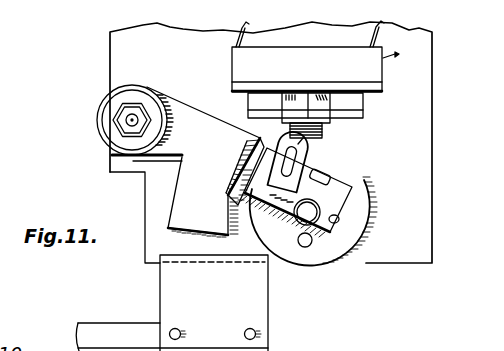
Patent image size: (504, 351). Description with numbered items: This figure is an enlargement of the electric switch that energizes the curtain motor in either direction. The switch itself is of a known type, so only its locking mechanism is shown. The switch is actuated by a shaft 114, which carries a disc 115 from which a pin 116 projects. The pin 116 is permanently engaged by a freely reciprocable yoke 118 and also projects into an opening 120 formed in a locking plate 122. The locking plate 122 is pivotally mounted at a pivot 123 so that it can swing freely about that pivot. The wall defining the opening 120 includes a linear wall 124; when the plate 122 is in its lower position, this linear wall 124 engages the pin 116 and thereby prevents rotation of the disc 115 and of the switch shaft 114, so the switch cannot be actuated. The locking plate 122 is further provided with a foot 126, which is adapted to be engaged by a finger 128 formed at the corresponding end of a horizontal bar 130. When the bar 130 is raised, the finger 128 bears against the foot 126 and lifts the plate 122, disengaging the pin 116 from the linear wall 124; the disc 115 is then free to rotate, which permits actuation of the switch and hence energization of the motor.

The shaft 114 is at (312, 212).
The disc 115 is at (322, 258).
The pin 116 is at (290, 165).
The yoke 118 is at (285, 147).
The opening 120 is at (335, 222).
The locking plate 122 is at (210, 97).
The pivot 123 is at (125, 122).
The linear wall 124 is at (318, 179).
The foot 126 is at (182, 205).
The finger 128 is at (170, 288).
The horizontal bar 130 is at (93, 330).